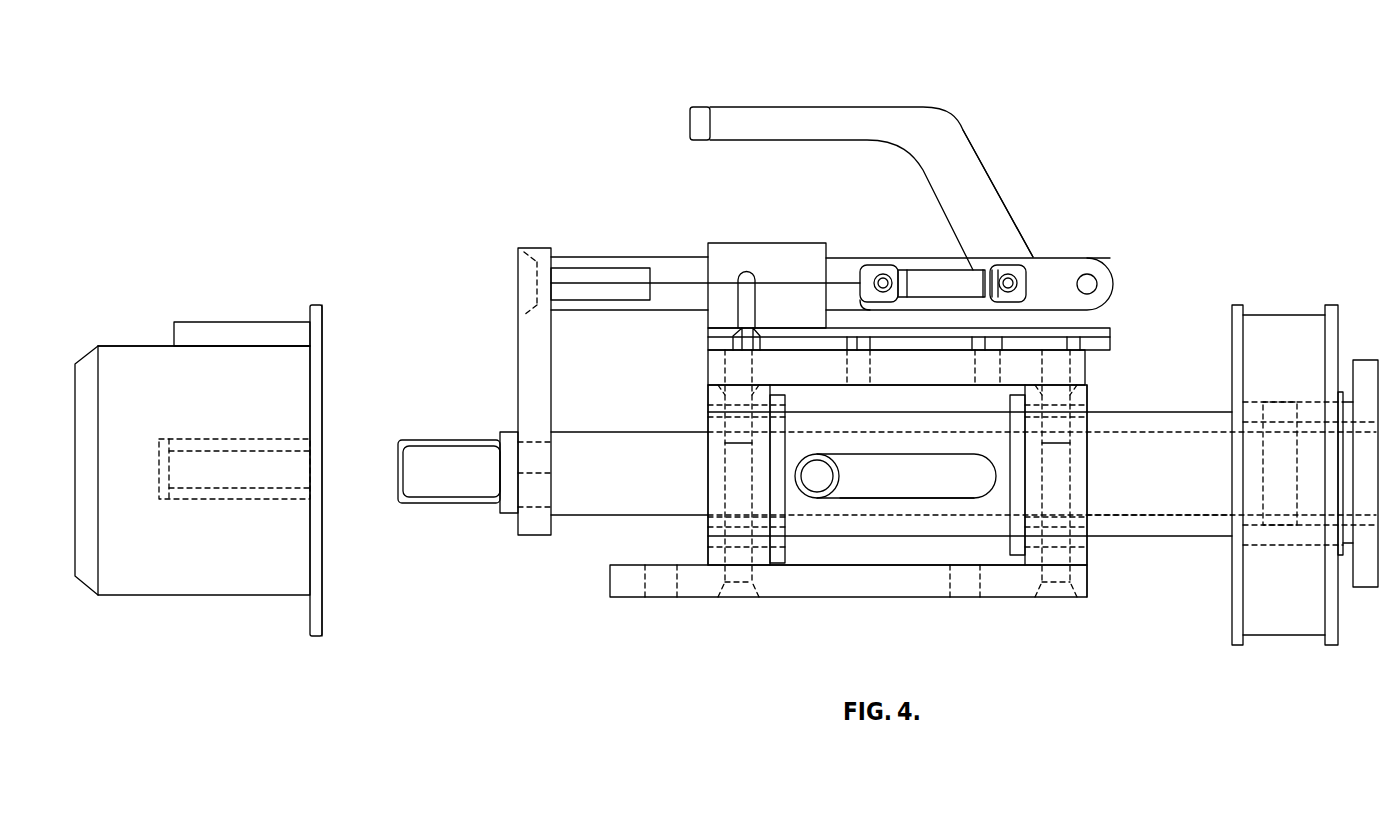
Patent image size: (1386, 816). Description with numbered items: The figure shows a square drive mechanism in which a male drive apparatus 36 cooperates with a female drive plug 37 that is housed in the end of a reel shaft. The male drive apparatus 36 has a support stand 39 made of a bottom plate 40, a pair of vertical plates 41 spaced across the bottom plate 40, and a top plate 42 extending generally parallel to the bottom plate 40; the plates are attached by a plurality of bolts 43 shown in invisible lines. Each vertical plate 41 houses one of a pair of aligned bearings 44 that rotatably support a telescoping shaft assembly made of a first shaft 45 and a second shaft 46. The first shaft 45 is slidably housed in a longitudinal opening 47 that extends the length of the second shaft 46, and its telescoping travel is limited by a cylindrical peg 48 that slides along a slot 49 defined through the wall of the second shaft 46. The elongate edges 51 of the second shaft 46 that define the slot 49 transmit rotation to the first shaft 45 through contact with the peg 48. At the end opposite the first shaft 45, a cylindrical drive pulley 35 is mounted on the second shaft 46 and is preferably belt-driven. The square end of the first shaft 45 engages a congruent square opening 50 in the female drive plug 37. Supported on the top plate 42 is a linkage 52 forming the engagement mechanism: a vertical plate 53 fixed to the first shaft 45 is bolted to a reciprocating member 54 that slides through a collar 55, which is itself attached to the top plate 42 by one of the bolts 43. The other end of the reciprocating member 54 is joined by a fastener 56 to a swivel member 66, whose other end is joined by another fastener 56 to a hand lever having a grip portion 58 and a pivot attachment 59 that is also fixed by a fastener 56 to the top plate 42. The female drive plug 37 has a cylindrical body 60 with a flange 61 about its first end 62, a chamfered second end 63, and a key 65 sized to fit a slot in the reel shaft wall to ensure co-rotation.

The cylindrical drive pulley 35 is at (1275, 327).
The male drive apparatus 36 is at (1070, 167).
The female drive plug 37 is at (244, 259).
The support stand 39 is at (1062, 482).
The bottom plate 40 is at (631, 590).
The vertical plates 41 is at (707, 505).
The top plate 42 is at (928, 383).
The bolts 43 is at (532, 278).
The bearings 44 is at (790, 552).
The first shaft 45 is at (618, 478).
The second shaft 46 is at (1110, 423).
The longitudinal opening 47 is at (1177, 517).
The cylindrical peg 48 is at (819, 487).
The slot 49 is at (913, 487).
The square opening 50 is at (324, 467).
The elongate edges 51 is at (890, 457).
The linkage 52 is at (985, 113).
The vertical plate 53 is at (545, 358).
The reciprocating member 54 is at (652, 257).
The collar 55 is at (740, 252).
The fastener 56 is at (881, 270).
The grip portion 58 is at (765, 113).
The pivot attachment 59 is at (1090, 255).
The cylindrical body 60 is at (190, 406).
The flange 61 is at (323, 306).
The first end 62 is at (324, 381).
The second end 63 is at (75, 364).
The key 65 is at (204, 319).
The swivel member 66 is at (947, 295).